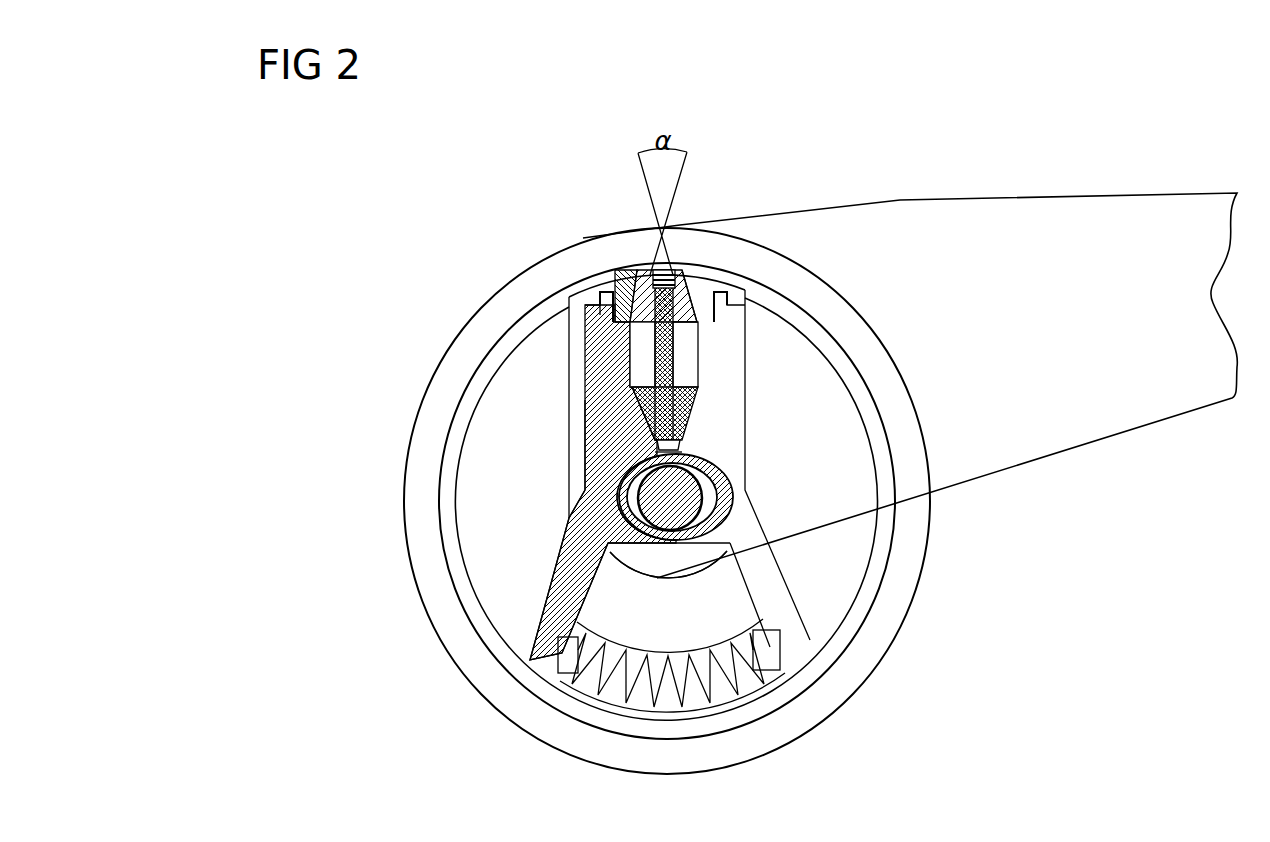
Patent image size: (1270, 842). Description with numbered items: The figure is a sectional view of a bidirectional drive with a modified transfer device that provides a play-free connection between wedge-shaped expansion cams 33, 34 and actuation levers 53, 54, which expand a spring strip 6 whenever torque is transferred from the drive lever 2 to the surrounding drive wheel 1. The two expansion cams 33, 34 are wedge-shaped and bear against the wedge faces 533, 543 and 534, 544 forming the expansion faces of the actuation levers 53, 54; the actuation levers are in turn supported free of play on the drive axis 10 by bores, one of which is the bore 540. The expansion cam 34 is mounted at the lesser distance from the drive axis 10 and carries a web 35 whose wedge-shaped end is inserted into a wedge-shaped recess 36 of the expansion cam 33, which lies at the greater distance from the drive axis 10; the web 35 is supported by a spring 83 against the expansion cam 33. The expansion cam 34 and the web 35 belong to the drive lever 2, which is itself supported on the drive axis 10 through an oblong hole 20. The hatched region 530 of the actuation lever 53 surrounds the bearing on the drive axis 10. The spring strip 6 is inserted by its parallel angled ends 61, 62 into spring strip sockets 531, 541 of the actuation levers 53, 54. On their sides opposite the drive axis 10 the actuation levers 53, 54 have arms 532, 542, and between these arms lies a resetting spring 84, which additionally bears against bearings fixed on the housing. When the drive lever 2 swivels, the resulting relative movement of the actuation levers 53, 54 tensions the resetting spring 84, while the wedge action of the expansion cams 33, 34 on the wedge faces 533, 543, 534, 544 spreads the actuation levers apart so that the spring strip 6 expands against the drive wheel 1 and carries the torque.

The drive wheel 1 is at (893, 607).
The drive lever 2 is at (1068, 425).
The spring strip 6 is at (448, 470).
The drive axis 10 is at (667, 507).
The oblong hole 20 is at (582, 487).
The expansion cam 33 is at (622, 268).
The expansion cam 34 is at (657, 448).
The web 35 is at (682, 356).
The wedge-shaped recess 36 is at (678, 290).
The actuation lever 53 is at (600, 365).
The actuation lever 54 is at (732, 422).
The angled end 61 is at (600, 290).
The angled end 62 is at (745, 292).
The spring 83 is at (657, 262).
The resetting spring 84 is at (677, 682).
The bearing portion 530 is at (633, 512).
The spring strip socket 531 is at (583, 306).
The arm 532 is at (555, 650).
The wedge face 533 is at (620, 270).
The wedge face 534 is at (637, 418).
The bore 540 is at (686, 540).
The spring strip socket 541 is at (745, 300).
The arm 542 is at (770, 632).
The wedge face 543 is at (712, 300).
The wedge face 544 is at (693, 433).